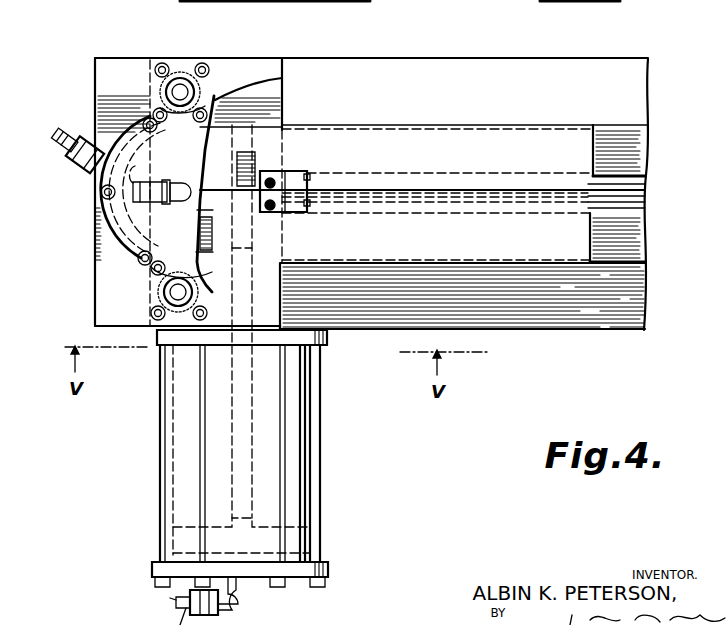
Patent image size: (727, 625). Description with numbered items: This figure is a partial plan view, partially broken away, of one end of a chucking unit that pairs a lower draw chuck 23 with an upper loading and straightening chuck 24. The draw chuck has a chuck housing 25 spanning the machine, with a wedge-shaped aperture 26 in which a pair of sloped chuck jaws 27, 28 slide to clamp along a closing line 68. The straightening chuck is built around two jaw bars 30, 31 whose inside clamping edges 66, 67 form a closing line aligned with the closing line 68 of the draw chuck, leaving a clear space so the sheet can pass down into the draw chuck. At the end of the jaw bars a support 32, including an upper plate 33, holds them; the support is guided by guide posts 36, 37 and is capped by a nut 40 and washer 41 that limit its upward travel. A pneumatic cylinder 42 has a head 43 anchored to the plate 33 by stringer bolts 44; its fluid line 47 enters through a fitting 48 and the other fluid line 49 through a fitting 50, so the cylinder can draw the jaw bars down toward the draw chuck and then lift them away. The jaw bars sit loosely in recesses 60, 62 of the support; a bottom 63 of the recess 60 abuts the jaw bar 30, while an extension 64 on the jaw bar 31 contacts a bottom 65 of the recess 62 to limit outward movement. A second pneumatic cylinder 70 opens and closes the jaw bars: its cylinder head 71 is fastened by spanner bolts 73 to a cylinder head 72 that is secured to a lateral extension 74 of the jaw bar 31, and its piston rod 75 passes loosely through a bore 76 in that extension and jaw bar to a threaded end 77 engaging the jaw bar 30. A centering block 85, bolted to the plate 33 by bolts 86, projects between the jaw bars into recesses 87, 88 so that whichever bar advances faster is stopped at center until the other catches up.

The draw chuck 23 is at (575, 58).
The loading and straightening chuck 24 is at (488, 125).
The chuck housing 25 is at (625, 92).
The wedge-shaped aperture 26 is at (641, 185).
The chuck jaw 27 is at (640, 210).
The chuck jaw 28 is at (608, 178).
The jaw bar 30 is at (566, 135).
The jaw bar 31 is at (574, 250).
The support 32 is at (92, 297).
The plate 33 is at (100, 88).
The guide post 36 is at (181, 78).
The guide post 37 is at (164, 292).
The nut 40 is at (196, 80).
The washer 41 is at (210, 90).
The pneumatic cylinder 42 is at (120, 257).
The cylinder head 43 is at (107, 175).
The stringer bolt 44 is at (101, 193).
The fluid line 47 is at (133, 183).
The fitting 48 is at (180, 182).
The fluid line 49 is at (56, 146).
The fitting 50 is at (88, 136).
The recess 60 is at (275, 114).
The recess 62 is at (212, 232).
The bottom 63 is at (282, 98).
The extension 64 is at (200, 215).
The bottom 65 is at (202, 249).
The clamping edge 66 is at (460, 190).
The clamping edge 67 is at (492, 203).
The closing line 68 is at (640, 194).
The pneumatic cylinder 70 is at (324, 510).
The cylinder head 71 is at (298, 572).
The cylinder head 72 is at (193, 340).
The spanner bolt 73 is at (192, 483).
The lateral extension 74 is at (279, 286).
The piston rod 75 is at (254, 433).
The bore 76 is at (254, 251).
The threaded end 77 is at (257, 160).
The centering block 85 is at (287, 181).
The bolt 86 is at (271, 203).
The recess 87 is at (309, 177).
The recess 88 is at (309, 203).